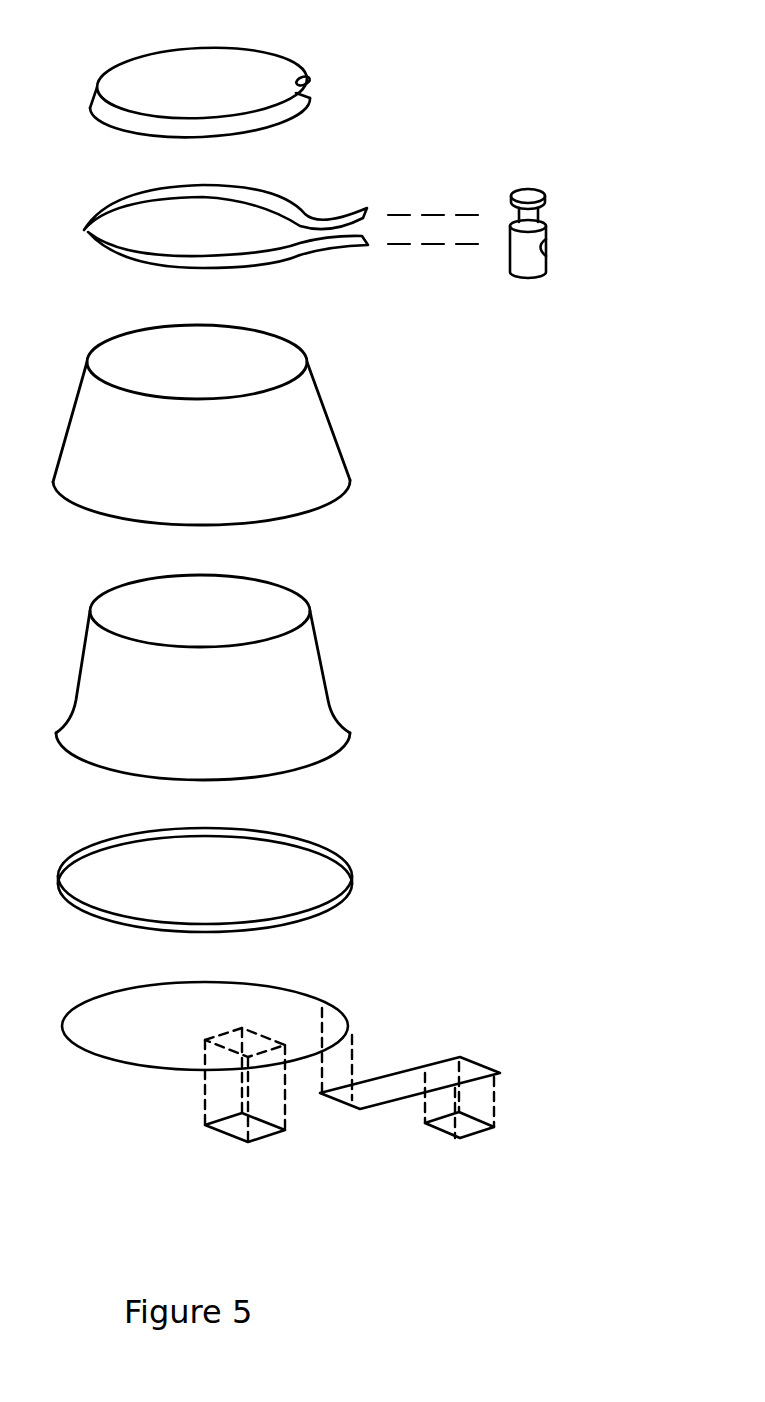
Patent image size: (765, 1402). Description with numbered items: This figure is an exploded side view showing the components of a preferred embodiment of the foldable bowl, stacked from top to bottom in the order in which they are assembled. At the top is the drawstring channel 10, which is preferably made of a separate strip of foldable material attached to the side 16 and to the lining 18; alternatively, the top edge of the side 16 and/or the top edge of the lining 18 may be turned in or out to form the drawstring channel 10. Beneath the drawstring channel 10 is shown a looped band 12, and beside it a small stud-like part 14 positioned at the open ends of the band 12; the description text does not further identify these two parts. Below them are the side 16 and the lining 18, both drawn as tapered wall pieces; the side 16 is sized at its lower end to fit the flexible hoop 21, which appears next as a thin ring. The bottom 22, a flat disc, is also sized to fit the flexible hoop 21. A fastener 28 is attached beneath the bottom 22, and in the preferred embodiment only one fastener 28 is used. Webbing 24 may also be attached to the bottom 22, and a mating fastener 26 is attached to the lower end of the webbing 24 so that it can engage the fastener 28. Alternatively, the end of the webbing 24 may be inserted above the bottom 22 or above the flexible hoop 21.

The drawstring channel 10 is at (310, 82).
The loop strap 12 is at (323, 216).
The pin 14 is at (547, 230).
The side 16 is at (320, 440).
The lining 18 is at (310, 692).
The flexible hoop 21 is at (332, 853).
The bottom 22 is at (300, 1000).
The webbing 24 is at (475, 1070).
The mating fastener 26 is at (465, 1128).
The fastener 28 is at (237, 1125).